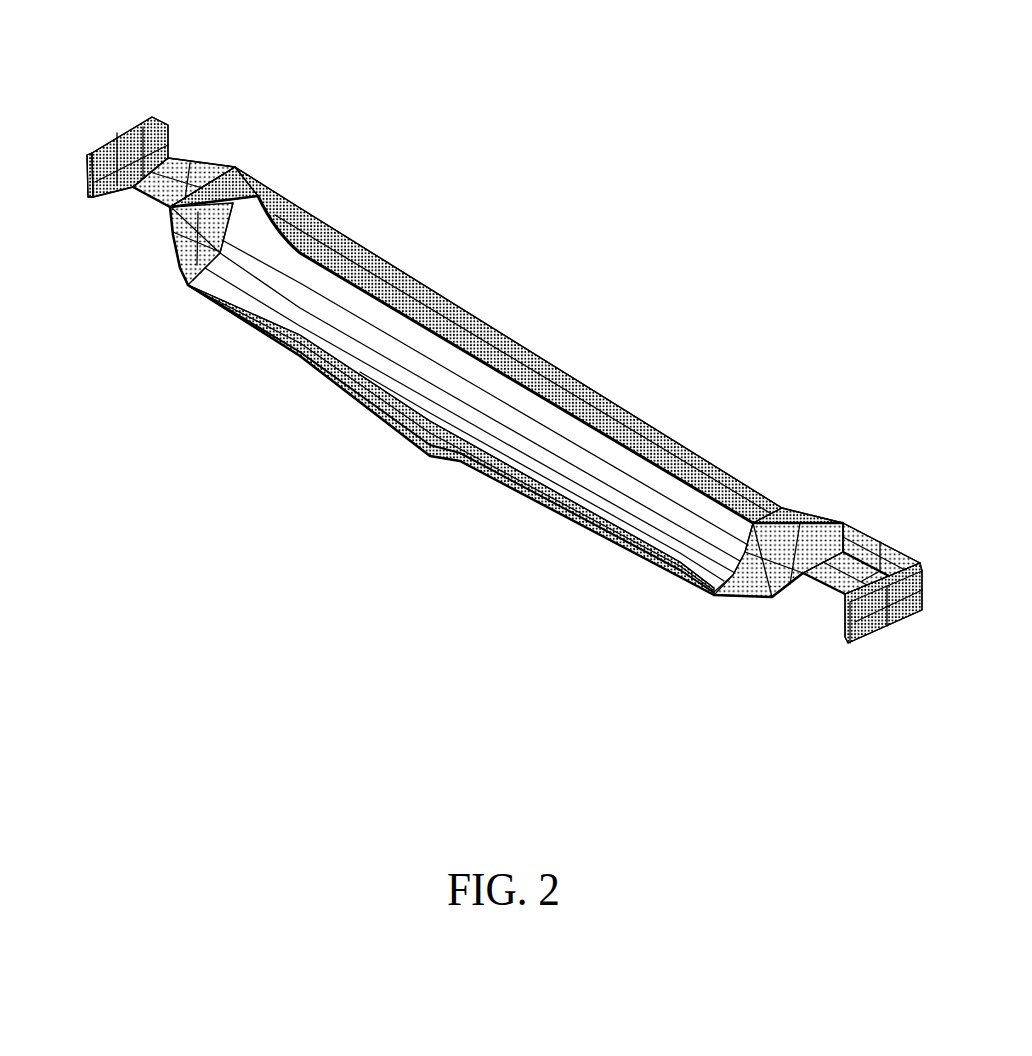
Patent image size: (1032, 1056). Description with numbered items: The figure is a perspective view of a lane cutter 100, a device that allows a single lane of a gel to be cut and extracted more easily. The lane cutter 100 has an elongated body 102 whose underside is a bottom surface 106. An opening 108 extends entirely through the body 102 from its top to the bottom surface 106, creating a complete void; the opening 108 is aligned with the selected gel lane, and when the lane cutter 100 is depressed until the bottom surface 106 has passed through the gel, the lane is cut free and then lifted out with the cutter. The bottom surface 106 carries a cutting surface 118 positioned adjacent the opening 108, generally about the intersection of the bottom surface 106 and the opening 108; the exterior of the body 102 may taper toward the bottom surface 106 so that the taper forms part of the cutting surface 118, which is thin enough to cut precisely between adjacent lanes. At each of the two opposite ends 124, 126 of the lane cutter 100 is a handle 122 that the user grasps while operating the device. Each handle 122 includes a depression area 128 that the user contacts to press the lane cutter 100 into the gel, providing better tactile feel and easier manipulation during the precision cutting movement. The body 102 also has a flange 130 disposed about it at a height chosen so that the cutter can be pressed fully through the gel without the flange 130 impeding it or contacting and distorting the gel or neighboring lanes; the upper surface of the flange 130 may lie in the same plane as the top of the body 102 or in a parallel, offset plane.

The lane cutter 100 is at (476, 395).
The body 102 is at (738, 473).
The bottom surface 106 is at (357, 226).
The opening 108 is at (418, 303).
The cutting surface 118 is at (598, 389).
The handle 122 is at (115, 214).
The end 124 is at (769, 616).
The end 126 is at (165, 292).
The depression area 128 is at (189, 162).
The flange 130 is at (494, 455).